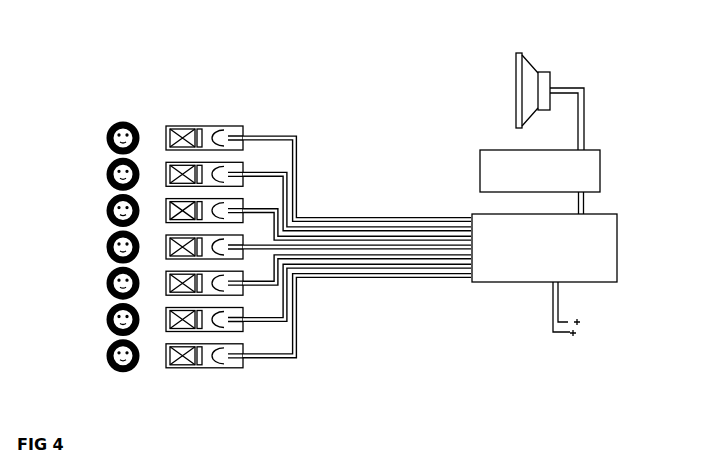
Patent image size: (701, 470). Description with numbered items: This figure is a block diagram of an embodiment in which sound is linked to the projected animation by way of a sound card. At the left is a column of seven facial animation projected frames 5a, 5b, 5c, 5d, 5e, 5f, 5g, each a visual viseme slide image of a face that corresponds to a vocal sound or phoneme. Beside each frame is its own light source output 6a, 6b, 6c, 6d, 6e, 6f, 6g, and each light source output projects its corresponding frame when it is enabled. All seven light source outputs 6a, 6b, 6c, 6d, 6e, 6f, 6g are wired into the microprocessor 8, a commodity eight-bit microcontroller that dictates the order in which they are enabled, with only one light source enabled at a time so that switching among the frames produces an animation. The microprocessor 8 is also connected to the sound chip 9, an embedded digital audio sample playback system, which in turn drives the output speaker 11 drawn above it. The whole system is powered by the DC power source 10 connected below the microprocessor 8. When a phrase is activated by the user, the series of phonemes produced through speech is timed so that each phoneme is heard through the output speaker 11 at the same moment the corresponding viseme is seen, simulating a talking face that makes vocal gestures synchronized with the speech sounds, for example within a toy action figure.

The facial animation projected frame 5a is at (101, 138).
The facial animation projected frame 5b is at (101, 174).
The facial animation projected frame 5c is at (101, 211).
The facial animation projected frame 5d is at (101, 247).
The facial animation projected frame 5e is at (101, 283).
The facial animation projected frame 5f is at (101, 320).
The facial animation projected frame 5g is at (101, 356).
The light source output 6a is at (318, 168).
The light source output 6b is at (318, 190).
The light source output 6c is at (318, 214).
The light source output 6d is at (318, 242).
The light source output 6e is at (318, 276).
The light source output 6f is at (318, 298).
The light source output 6g is at (318, 322).
The microprocessor 8 is at (590, 238).
The sound chip 9 is at (577, 162).
The DC power source 10 is at (567, 333).
The output speaker 11 is at (528, 78).